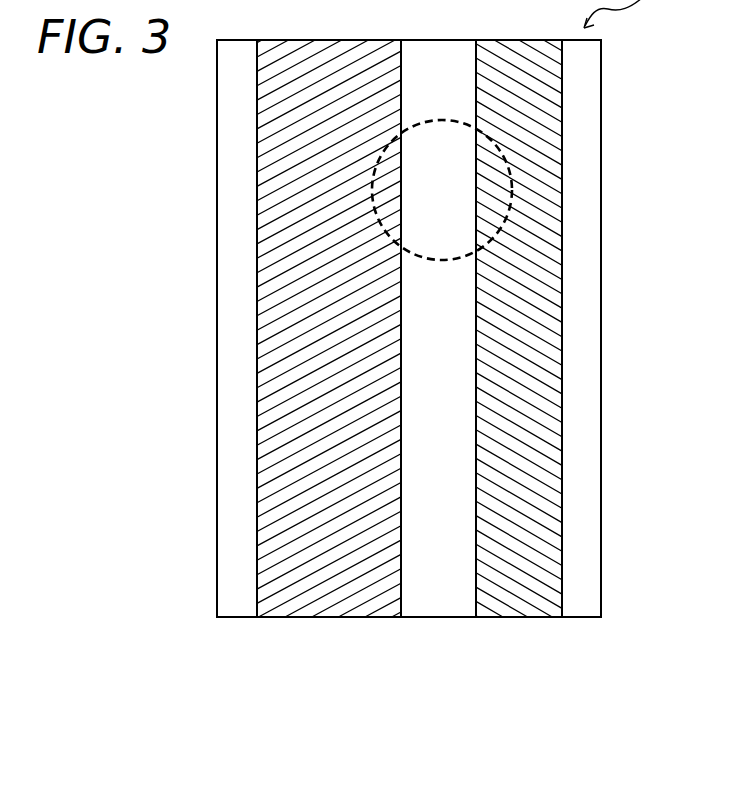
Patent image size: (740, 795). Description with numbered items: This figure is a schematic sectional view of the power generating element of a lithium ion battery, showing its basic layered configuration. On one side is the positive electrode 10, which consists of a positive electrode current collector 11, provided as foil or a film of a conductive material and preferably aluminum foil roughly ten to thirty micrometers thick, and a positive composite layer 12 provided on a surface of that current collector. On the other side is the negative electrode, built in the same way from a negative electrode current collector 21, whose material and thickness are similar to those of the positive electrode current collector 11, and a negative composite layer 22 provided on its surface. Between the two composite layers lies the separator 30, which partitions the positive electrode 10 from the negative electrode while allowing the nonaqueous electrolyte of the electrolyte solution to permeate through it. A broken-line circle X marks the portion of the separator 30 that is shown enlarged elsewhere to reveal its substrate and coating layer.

The positive electrode 10 is at (406, 392).
The positive electrode current collector 11 is at (243, 607).
The positive composite layer 12 is at (333, 607).
The negative electrode current collector 21 is at (582, 607).
The negative composite layer 22 is at (518, 607).
The separator 30 is at (438, 607).
The circle X is at (512, 186).